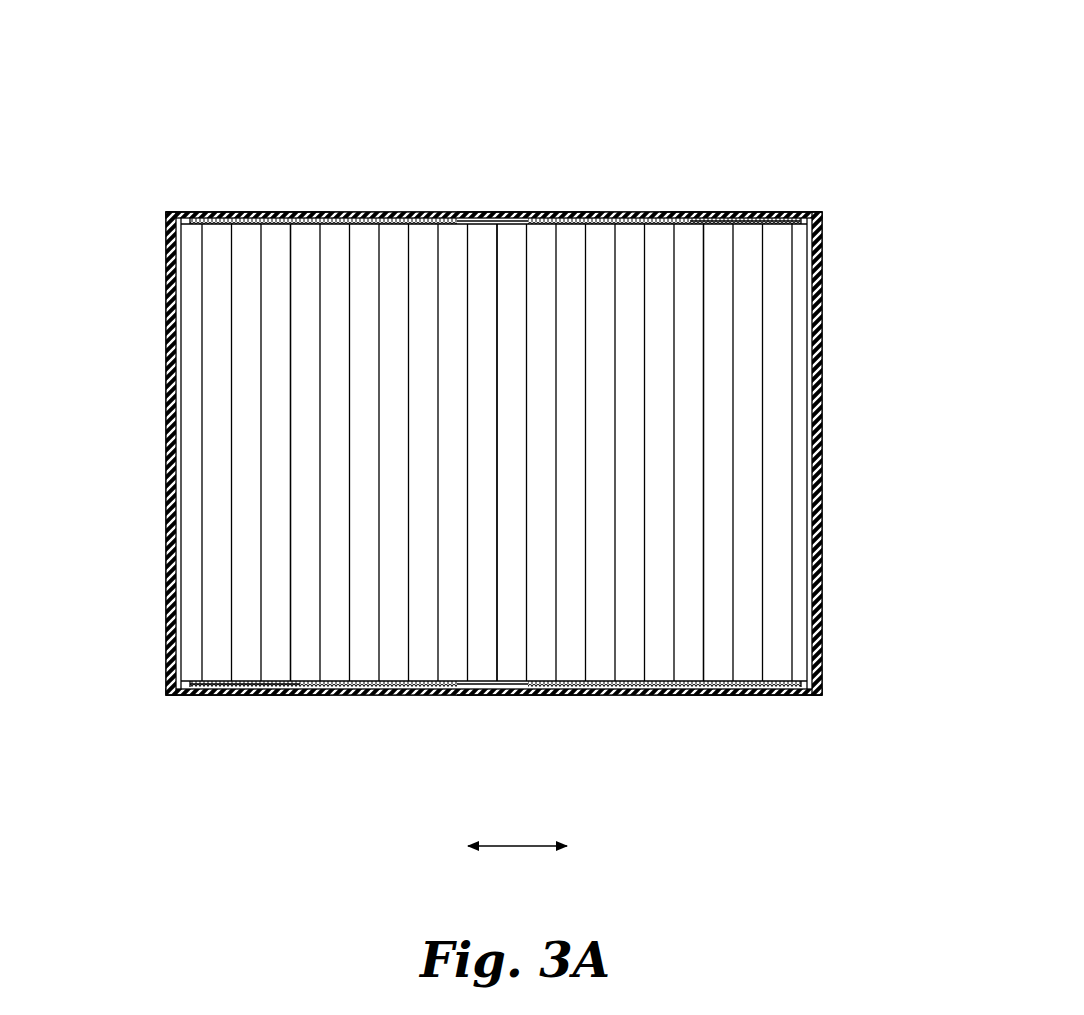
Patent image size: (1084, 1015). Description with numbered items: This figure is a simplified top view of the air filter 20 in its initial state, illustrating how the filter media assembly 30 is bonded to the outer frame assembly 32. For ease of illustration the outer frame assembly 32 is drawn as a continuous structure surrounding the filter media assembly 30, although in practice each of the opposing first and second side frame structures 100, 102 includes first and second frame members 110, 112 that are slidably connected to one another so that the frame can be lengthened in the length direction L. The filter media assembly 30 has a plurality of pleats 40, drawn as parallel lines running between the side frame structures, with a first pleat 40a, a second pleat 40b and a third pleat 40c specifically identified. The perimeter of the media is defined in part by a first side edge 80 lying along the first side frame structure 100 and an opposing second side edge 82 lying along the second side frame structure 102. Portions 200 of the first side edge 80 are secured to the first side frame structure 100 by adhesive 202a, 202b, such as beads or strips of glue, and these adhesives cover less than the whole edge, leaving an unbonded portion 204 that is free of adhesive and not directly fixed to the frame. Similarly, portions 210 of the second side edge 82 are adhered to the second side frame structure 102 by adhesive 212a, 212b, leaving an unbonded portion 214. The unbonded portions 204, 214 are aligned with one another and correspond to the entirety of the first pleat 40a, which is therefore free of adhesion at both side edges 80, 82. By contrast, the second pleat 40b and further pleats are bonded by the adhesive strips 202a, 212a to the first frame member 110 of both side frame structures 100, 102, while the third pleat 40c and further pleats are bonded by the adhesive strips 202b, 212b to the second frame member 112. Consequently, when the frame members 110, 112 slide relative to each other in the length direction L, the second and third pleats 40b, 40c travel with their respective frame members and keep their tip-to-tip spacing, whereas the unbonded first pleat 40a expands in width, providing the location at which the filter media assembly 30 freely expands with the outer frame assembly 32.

The air filter 20 is at (622, 75).
The filter media assembly 30 is at (245, 433).
The outer frame assembly 32 is at (152, 337).
The pleats 40 is at (630, 452).
The first pleat 40a is at (505, 620).
The second pleat 40b is at (275, 530).
The third pleat 40c is at (700, 508).
The first side edge 80 is at (275, 672).
The second side edge 82 is at (705, 228).
The first side frame structure 100 is at (519, 703).
The second side frame structure 102 is at (530, 210).
The first frame member 110 is at (293, 211).
The second frame member 112 is at (693, 211).
The bonded portions of first side edge 200 is at (680, 677).
The adhesive 202a is at (190, 685).
The adhesive 202b is at (822, 686).
The unbonded portion 204 is at (478, 682).
The bonded portions of second side edge 210 is at (258, 228).
The adhesive 212a is at (190, 222).
The adhesive 212b is at (822, 222).
The unbonded portion 214 is at (477, 220).
The length direction L is at (520, 846).